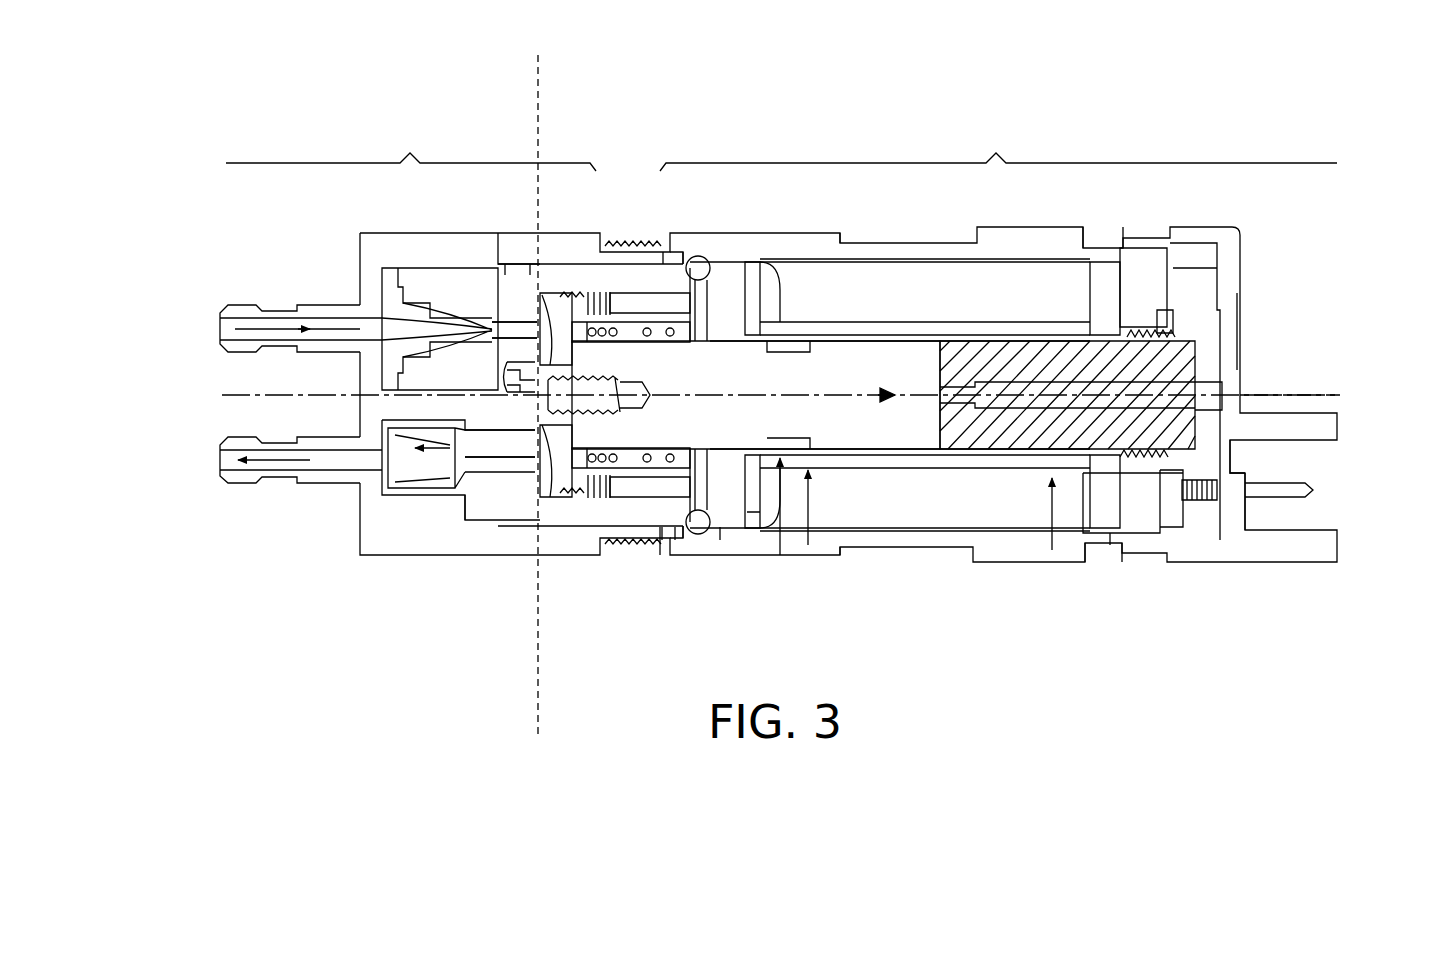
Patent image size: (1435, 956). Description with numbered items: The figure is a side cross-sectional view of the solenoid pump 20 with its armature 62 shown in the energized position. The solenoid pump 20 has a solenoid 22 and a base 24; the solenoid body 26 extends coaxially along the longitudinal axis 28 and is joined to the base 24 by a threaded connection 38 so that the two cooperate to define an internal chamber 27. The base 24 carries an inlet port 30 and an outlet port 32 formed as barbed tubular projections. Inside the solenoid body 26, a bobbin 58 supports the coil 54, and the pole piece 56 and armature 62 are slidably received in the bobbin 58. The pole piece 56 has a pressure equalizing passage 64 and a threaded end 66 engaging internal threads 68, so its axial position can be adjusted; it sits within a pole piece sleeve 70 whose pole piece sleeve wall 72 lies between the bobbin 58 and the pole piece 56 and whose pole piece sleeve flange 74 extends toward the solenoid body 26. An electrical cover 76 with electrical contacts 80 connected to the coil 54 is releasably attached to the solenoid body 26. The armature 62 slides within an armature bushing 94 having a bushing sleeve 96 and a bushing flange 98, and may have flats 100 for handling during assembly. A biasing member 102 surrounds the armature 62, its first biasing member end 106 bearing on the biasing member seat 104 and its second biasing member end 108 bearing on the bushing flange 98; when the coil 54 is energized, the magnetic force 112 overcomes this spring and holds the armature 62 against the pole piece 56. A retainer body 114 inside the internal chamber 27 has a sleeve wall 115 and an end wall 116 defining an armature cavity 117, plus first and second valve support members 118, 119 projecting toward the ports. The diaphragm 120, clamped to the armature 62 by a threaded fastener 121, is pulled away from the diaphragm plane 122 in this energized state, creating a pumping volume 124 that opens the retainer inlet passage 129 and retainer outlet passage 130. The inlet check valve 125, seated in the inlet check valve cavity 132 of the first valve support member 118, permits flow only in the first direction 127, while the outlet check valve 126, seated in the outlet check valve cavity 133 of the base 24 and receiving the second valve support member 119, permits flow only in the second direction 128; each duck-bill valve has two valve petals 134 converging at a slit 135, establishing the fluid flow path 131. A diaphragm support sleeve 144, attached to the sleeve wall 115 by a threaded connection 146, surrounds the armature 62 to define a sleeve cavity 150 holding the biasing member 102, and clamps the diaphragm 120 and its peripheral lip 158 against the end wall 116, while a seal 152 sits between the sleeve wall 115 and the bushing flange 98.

The solenoid pump 20 is at (962, 76).
The solenoid 22 is at (998, 148).
The base 24 is at (411, 148).
The solenoid body 26 is at (1012, 548).
The internal chamber 27 is at (686, 555).
The longitudinal axis 28 is at (1283, 393).
The inlet port 30 is at (245, 328).
The outlet port 32 is at (245, 460).
The threaded connection 38 is at (636, 232).
The coil 54 is at (940, 510).
The pole piece 56 is at (1110, 545).
The bobbin 58 is at (866, 300).
The armature 62 is at (860, 427).
The pressure equalizing passage 64 is at (1066, 300).
The threaded end 66 is at (1160, 535).
The internal threads 68 is at (1150, 300).
The pole piece sleeve 70 is at (1052, 550).
The pole piece sleeve wall 72 is at (1010, 385).
The pole piece sleeve flange 74 is at (1142, 318).
The electrical cover 76 is at (1220, 283).
The electrical contacts 80 is at (1282, 490).
The armature bushing 94 is at (810, 540).
The bushing sleeve 96 is at (823, 325).
The bushing flange 98 is at (730, 270).
The flats 100 is at (781, 555).
The biasing member 102 is at (662, 560).
The biasing member seat 104 is at (618, 555).
The first biasing member end 106 is at (628, 555).
The second biasing member end 108 is at (710, 540).
The magnetic force 112 is at (885, 383).
The retainer body 114 is at (500, 250).
The sleeve wall 115 is at (662, 233).
The end wall 116 is at (531, 275).
The armature cavity 117 is at (677, 300).
The first valve support member 118 is at (420, 275).
The second valve support member 119 is at (440, 520).
The diaphragm 120 is at (578, 275).
The threaded fastener 121 is at (522, 500).
The diaphragm plane 122 is at (536, 97).
The pumping volume 124 is at (545, 500).
The inlet check valve 125 is at (390, 290).
The outlet check valve 126 is at (440, 408).
The first direction 127 is at (355, 332).
The second direction 128 is at (413, 497).
The retainer inlet passage 129 is at (507, 262).
The retainer outlet passage 130 is at (512, 470).
The fluid flow path 131 is at (410, 520).
The inlet check valve cavity 132 is at (455, 262).
The outlet check valve cavity 133 is at (413, 500).
The valve petals 134 is at (455, 318).
The slit 135 is at (470, 340).
The diaphragm support sleeve 144 is at (675, 555).
The threaded connection 146 is at (583, 262).
The sleeve cavity 150 is at (662, 270).
The seal 152 is at (722, 560).
The peripheral lip 158 is at (560, 540).